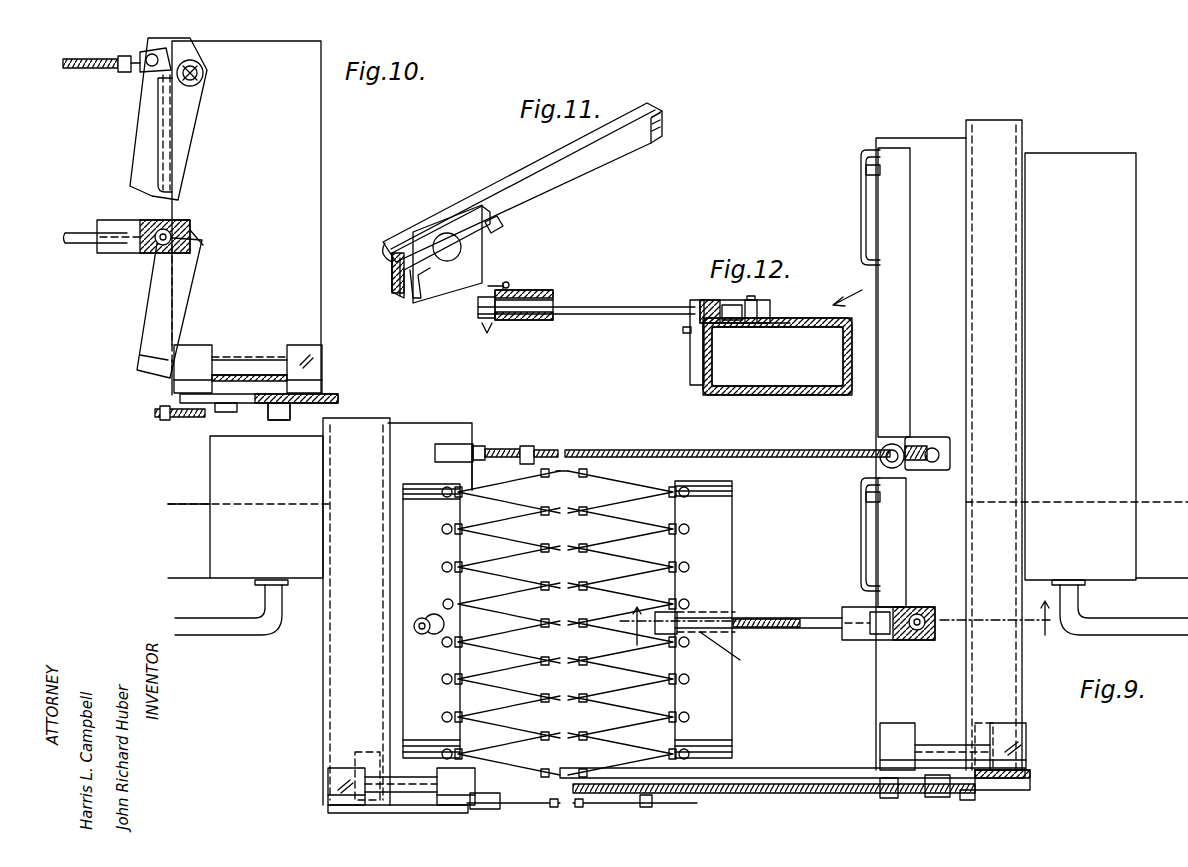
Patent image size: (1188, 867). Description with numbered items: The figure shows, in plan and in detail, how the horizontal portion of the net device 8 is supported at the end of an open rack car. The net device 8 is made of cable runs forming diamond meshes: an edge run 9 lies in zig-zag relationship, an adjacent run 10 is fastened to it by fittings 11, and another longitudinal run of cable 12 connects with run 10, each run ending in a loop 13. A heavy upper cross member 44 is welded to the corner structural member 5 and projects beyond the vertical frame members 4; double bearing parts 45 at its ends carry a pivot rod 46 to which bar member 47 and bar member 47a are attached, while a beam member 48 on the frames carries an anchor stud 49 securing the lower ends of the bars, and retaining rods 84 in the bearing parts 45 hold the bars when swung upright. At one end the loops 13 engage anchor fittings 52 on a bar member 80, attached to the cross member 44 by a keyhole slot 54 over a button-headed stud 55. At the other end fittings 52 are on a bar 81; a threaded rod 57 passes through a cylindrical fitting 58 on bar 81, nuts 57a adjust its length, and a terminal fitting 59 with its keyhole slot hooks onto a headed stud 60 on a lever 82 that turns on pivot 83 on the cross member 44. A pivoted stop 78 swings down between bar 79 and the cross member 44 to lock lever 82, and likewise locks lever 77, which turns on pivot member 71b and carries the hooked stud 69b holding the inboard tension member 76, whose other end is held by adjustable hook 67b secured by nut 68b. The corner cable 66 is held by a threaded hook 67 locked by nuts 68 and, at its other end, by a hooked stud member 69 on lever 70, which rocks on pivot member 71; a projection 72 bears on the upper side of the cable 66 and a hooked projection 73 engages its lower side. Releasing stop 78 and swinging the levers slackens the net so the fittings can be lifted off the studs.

In FIG. 9, the vertical frame members 4 is at (1160, 500).
In FIG. 9, the corner structural member 5 is at (1138, 237).
In FIG. 9, the net device 8 is at (602, 541).
In FIG. 9, the edge run 9 is at (576, 468).
In FIG. 9, the adjacent run 10 is at (638, 476).
In FIG. 9, the fittings 11 is at (548, 505).
In FIG. 12, the longitudinal run of cable 12 is at (847, 298).
In FIG. 9, the longitudinal run of cable 12 is at (735, 505).
In FIG. 9, the loop 13 is at (443, 487).
In FIG. 10, the upper cross member 44 is at (322, 166).
In FIG. 12, the upper cross member 44 is at (720, 398).
In FIG. 9, the upper cross member 44 is at (1005, 152).
In FIG. 10, the double bearing parts 45 is at (248, 369).
In FIG. 9, the double bearing parts 45 is at (328, 768).
In FIG. 10, the pivot rod 46 is at (249, 369).
In FIG. 11, the pivot rod 46 is at (398, 230).
In FIG. 9, the pivot rod 46 is at (400, 777).
In FIG. 11, the bar member 47 is at (483, 263).
In FIG. 9, the bar member 47 is at (993, 772).
In FIG. 9, the bar member 47a is at (380, 808).
In FIG. 9, the beam member 48 is at (980, 118).
In FIG. 9, the anchor stud 49 is at (352, 752).
In FIG. 12, the anchor fittings 52 is at (510, 284).
In FIG. 9, the anchor fittings 52 is at (442, 491).
In FIG. 9, the keyhole slots 54 is at (905, 641).
In FIG. 9, the button-headed studs 55 is at (414, 626).
In FIG. 10, the threaded rod members 57 is at (72, 245).
In FIG. 12, the threaded rod members 57 is at (636, 300).
In FIG. 9, the threaded rod members 57 is at (813, 617).
In FIG. 12, the nuts 57a is at (480, 330).
In FIG. 9, the nuts 57a is at (736, 651).
In FIG. 12, the cylindrical fittings 58 is at (523, 320).
In FIG. 9, the cylindrical fittings 58 is at (725, 612).
In FIG. 10, the terminal fittings 59 is at (125, 254).
In FIG. 12, the terminal fittings 59 is at (772, 310).
In FIG. 9, the terminal fittings 59 is at (845, 641).
In FIG. 10, the headed studs 60 is at (158, 246).
In FIG. 12, the headed studs 60 is at (757, 301).
In FIG. 9, the headed studs 60 is at (922, 612).
In FIG. 10, the corner cable 66 is at (155, 414).
In FIG. 9, the corner cable 66 is at (790, 793).
In FIG. 9, the threaded hook 67 is at (520, 808).
In FIG. 9, the adjustable hook 67b is at (528, 446).
In FIG. 9, the nuts 68 is at (488, 810).
In FIG. 9, the nut 68b is at (462, 447).
In FIG. 10, the hooked stud member 69 is at (205, 418).
In FIG. 11, the hooked stud member 69 is at (412, 298).
In FIG. 9, the hooked stud member 69 is at (968, 800).
In FIG. 10, the hooked stud 69b is at (142, 48).
In FIG. 9, the hooked stud 69b is at (942, 437).
In FIG. 10, the lever 70 is at (338, 400).
In FIG. 11, the lever 70 is at (575, 170).
In FIG. 9, the lever 70 is at (790, 768).
In FIG. 11, the shallow headed pivot member 71 is at (447, 233).
In FIG. 9, the shallow headed pivot member 71 is at (937, 798).
In FIG. 10, the pivot member 71b is at (205, 74).
In FIG. 9, the pivot member 71b is at (883, 445).
In FIG. 11, the projection 72 is at (503, 230).
In FIG. 9, the projection 72 is at (888, 799).
In FIG. 11, the projection 73 is at (662, 125).
In FIG. 9, the projection 73 is at (646, 808).
In FIG. 10, the inboard tension member 76 is at (98, 70).
In FIG. 9, the inboard tension member 76 is at (760, 450).
In FIG. 10, the lever 77 is at (135, 160).
In FIG. 9, the lever 77 is at (908, 345).
In FIG. 10, the pivoted stop 78 is at (170, 388).
In FIG. 12, the pivoted stop 78 is at (690, 360).
In FIG. 9, the pivoted stop 78 is at (866, 170).
In FIG. 10, the bar 79 is at (157, 98).
In FIG. 12, the bar 79 is at (683, 331).
In FIG. 9, the bar 79 is at (861, 210).
In FIG. 9, the bar member 80 is at (403, 669).
In FIG. 12, the bar 81 is at (550, 290).
In FIG. 9, the bar 81 is at (733, 553).
In FIG. 10, the lever 82 is at (150, 332).
In FIG. 12, the lever 82 is at (775, 327).
In FIG. 9, the lever 82 is at (906, 557).
In FIG. 10, the pivot 83 is at (205, 243).
In FIG. 12, the pivot 83 is at (737, 322).
In FIG. 9, the pivot 83 is at (880, 612).
In FIG. 10, the retaining rods 84 is at (306, 361).
In FIG. 9, the retaining rods 84 is at (338, 790).